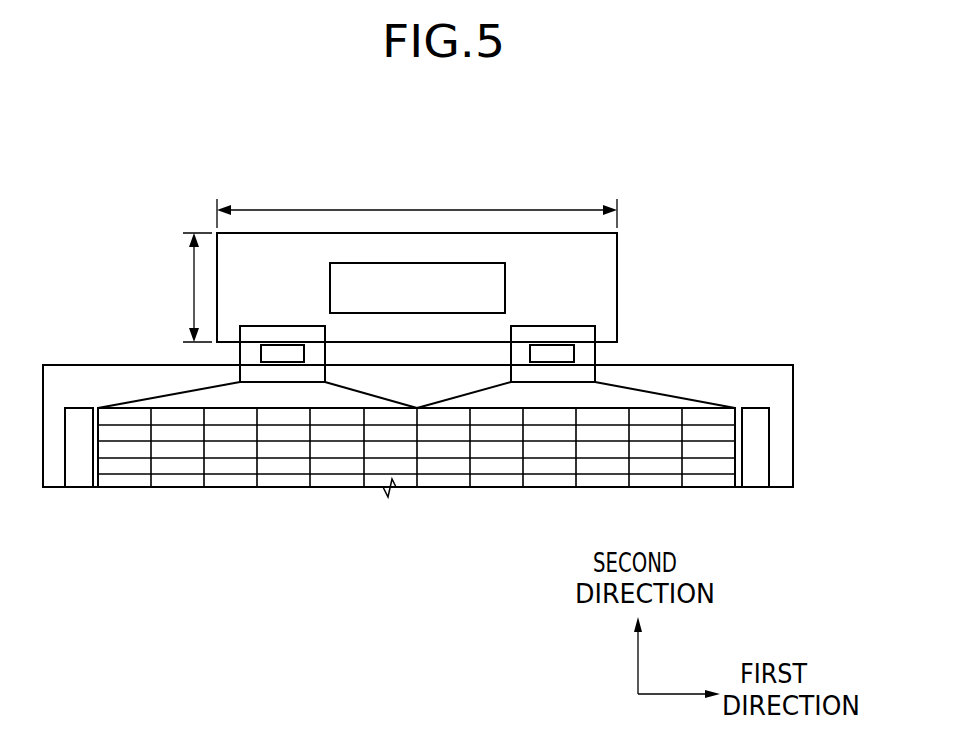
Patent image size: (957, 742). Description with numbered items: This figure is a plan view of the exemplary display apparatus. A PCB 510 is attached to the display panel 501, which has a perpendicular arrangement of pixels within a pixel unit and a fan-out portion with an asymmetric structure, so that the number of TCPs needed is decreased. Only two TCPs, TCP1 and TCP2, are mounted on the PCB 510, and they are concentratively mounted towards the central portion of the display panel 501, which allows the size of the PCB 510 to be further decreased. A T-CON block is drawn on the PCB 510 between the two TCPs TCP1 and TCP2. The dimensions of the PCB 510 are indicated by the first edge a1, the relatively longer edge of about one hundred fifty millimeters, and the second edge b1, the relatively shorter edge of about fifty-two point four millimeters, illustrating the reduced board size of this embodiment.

The display panel 501 is at (793, 417).
The PCB 510 is at (617, 287).
The timing controller T-CON is at (417, 288).
The TCP TCP1 is at (284, 326).
The TCP TCP2 is at (553, 326).
The first edge a1 is at (417, 204).
The second edge b1 is at (186, 287).